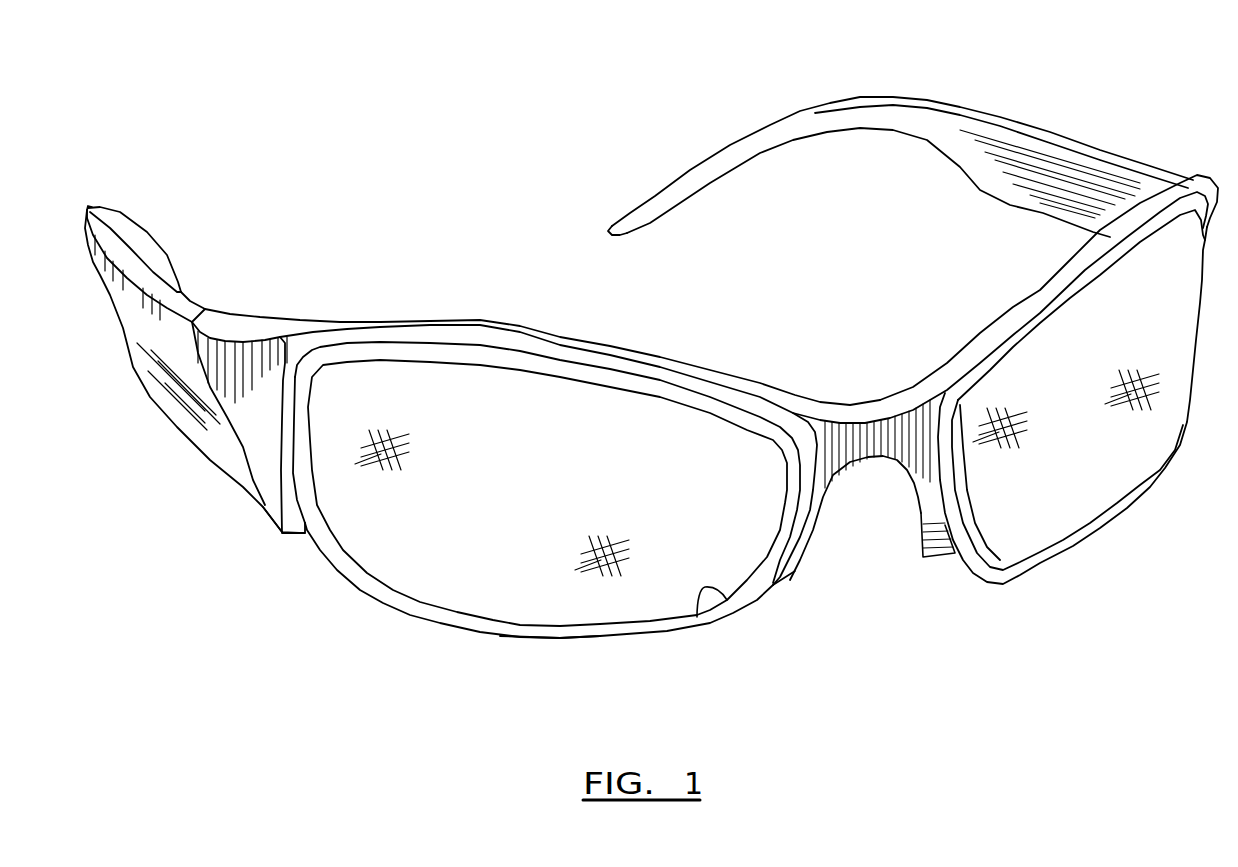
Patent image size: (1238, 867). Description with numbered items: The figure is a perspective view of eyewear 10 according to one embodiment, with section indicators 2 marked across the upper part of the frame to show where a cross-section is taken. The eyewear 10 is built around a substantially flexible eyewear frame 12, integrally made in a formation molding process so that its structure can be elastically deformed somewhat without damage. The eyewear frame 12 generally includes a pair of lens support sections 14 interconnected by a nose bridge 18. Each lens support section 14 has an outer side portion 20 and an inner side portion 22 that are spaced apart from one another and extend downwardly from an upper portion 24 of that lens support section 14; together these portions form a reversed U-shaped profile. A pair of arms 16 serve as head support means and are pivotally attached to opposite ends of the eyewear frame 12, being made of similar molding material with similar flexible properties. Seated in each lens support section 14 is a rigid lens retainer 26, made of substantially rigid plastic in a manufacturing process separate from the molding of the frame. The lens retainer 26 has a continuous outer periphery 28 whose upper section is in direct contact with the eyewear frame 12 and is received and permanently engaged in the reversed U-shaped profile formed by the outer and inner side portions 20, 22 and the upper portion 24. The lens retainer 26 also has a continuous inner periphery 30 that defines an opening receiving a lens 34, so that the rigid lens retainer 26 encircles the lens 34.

The eyewear 10 is at (430, 258).
The eyewear frame 12 is at (271, 330).
The lens support section 14 is at (380, 320).
The arm 16 is at (98, 213).
The nose bridge 18 is at (842, 424).
The outer side portion 20 is at (273, 498).
The inner side portion 22 is at (795, 570).
The upper portion 24 is at (615, 363).
The rigid lens retainer 26 is at (458, 620).
The outer periphery 28 is at (558, 639).
The inner periphery 30 is at (697, 617).
The lens 34 is at (538, 543).
The section line 2- 2 is at (482, 307).